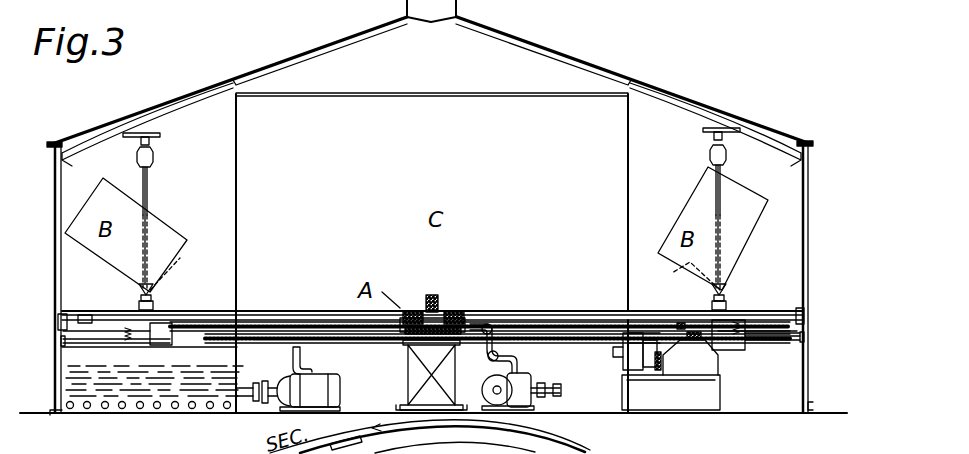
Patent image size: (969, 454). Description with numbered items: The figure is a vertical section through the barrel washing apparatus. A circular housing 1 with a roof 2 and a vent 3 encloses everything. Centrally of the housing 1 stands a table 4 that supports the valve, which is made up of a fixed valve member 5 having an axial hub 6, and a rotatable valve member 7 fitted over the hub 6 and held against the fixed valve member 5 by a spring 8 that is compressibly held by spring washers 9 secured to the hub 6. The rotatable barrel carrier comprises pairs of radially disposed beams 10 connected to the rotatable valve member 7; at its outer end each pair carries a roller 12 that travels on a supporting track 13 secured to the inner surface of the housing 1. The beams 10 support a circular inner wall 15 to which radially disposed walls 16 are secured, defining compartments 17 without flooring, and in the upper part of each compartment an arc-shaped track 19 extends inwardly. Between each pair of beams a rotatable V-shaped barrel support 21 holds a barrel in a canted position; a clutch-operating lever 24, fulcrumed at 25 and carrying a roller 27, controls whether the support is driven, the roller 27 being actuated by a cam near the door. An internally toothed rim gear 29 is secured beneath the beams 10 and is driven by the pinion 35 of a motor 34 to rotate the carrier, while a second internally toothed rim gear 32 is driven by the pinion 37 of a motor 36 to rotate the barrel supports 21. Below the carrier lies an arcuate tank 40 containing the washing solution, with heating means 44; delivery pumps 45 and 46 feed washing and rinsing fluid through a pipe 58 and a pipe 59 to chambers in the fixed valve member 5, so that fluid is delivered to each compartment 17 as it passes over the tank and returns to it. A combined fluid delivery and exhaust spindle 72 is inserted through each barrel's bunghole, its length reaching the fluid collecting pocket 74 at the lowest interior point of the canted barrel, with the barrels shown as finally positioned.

The circular housing 1 is at (808, 208).
The roof 2 is at (570, 56).
The vent 3 is at (443, 7).
The table 4 is at (408, 388).
The fixed valve member 5 is at (430, 336).
The axial hub 6 is at (436, 297).
The rotatable valve member 7 is at (448, 312).
The spring 8 is at (427, 302).
The spring washers 9 is at (434, 303).
The radially disposed beams 10 is at (330, 316).
The roller 12 is at (58, 316).
The supporting track 13 is at (58, 326).
The circular inner wall 15 is at (234, 151).
The radially disposed walls 16 is at (203, 103).
The compartments 17 is at (431, 210).
The track 19 is at (104, 133).
The V-shaped barrel support 21 is at (155, 289).
The lever 24 is at (85, 345).
The fulcrum 25 is at (750, 340).
The roller 27 is at (63, 341).
The internally toothed rim gear 29 is at (583, 323).
The second internally toothed rim gear 32 is at (615, 343).
The motor 34 is at (630, 362).
The driving pinion 35 is at (683, 330).
The motor 36 is at (638, 364).
The driving pinion 37 is at (693, 339).
The arcuate tank 40 is at (68, 393).
The heating means 44 is at (90, 410).
The delivery pump 45 is at (330, 376).
The delivery pump 46 is at (521, 381).
The pipe 58 is at (377, 332).
The pipe 59 is at (477, 324).
The combined fluid delivery and exhaust spindle 72 is at (148, 180).
The fluid collecting pocket 74 is at (435, 274).